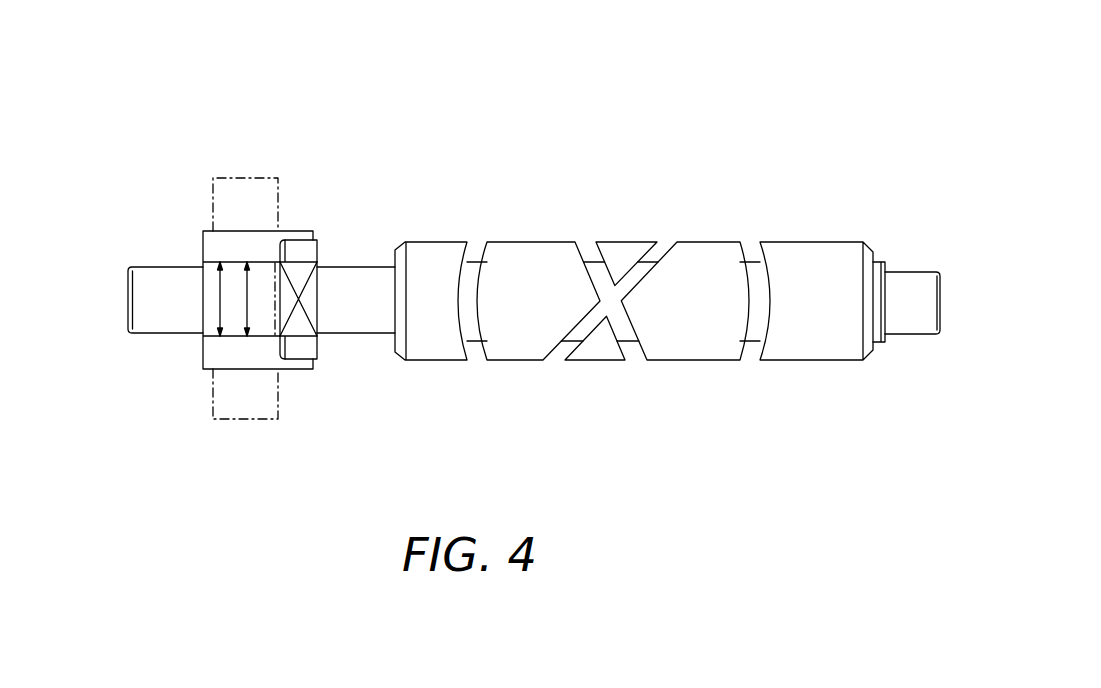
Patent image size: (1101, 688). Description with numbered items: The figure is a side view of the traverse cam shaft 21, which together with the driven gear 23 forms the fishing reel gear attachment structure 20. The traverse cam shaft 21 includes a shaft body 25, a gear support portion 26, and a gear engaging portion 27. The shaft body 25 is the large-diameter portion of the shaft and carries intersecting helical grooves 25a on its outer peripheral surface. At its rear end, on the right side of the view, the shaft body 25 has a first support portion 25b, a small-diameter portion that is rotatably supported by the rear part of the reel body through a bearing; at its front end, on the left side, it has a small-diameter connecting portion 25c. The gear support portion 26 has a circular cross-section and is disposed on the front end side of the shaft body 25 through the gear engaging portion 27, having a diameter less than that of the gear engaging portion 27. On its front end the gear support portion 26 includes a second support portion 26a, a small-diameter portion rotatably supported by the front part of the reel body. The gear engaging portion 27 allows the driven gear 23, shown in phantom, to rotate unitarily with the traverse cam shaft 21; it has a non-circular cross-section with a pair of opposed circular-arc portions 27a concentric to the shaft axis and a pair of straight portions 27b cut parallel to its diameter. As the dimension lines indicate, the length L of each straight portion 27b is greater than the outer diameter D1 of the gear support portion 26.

The fishing reel gear attachment structure 20 is at (963, 258).
The traverse cam shaft 21 is at (673, 205).
The driven gear 23 is at (247, 178).
The shaft body 25 is at (726, 226).
The helical grooves 25a is at (582, 242).
The first support portion 25b is at (912, 273).
The connecting portion 25c is at (358, 266).
The gear support portion 26 is at (235, 243).
The second support portion 26a is at (172, 267).
The gear engaging portion 27 is at (303, 228).
The circular-arc portions 27a is at (311, 240).
The straight portions 27b is at (300, 325).